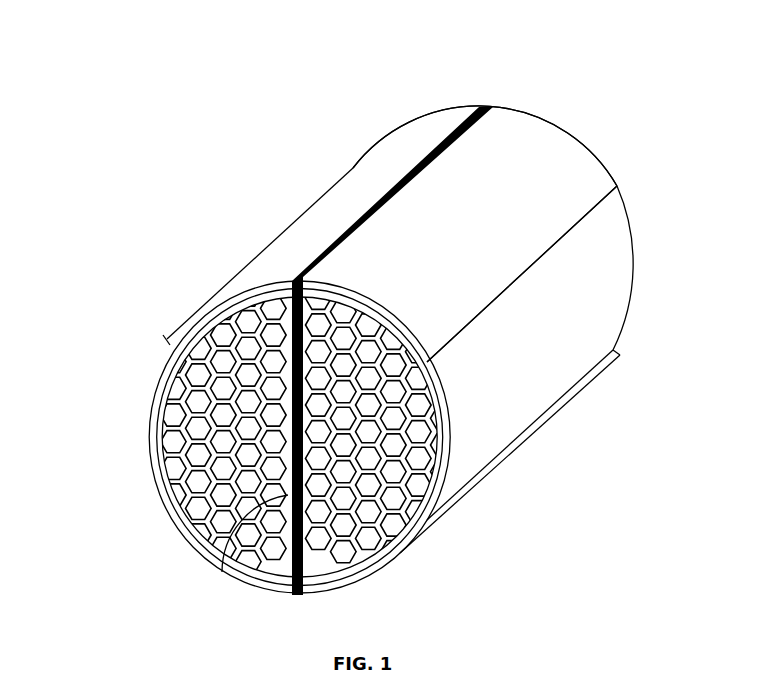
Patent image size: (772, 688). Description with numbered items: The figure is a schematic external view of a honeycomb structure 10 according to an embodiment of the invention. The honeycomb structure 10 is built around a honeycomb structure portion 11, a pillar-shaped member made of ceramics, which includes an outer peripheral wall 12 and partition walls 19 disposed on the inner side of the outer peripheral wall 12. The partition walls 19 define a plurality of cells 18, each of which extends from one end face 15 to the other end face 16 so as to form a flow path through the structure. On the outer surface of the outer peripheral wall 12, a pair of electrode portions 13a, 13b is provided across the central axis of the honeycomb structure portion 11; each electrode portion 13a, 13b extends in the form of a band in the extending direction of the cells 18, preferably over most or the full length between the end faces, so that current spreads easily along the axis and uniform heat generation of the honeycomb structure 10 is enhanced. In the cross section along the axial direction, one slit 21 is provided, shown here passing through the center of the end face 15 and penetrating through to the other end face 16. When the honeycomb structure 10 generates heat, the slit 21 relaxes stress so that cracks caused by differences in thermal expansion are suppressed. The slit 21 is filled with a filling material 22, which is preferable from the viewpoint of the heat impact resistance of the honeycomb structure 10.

The honeycomb structure 10 is at (252, 128).
The honeycomb structure portion 11 is at (143, 413).
The outer peripheral wall 12 is at (597, 305).
The electrode portion 13a is at (553, 143).
The electrode portion 13b is at (400, 557).
The end face 15 is at (440, 412).
The other end face 16 is at (630, 233).
The cell 18 is at (195, 488).
The partition wall 19 is at (197, 357).
The slit 21 is at (262, 283).
The filling material 22 is at (222, 572).